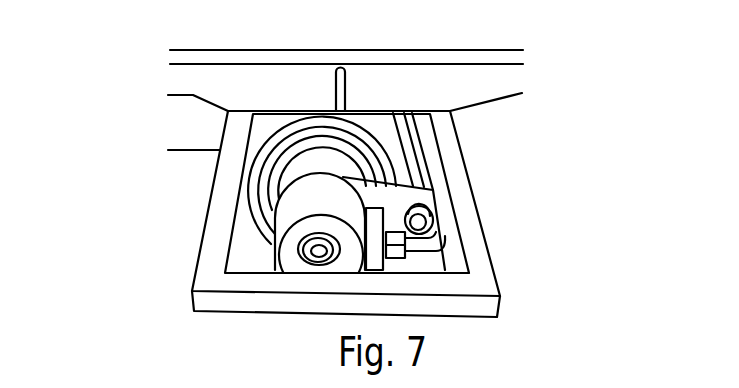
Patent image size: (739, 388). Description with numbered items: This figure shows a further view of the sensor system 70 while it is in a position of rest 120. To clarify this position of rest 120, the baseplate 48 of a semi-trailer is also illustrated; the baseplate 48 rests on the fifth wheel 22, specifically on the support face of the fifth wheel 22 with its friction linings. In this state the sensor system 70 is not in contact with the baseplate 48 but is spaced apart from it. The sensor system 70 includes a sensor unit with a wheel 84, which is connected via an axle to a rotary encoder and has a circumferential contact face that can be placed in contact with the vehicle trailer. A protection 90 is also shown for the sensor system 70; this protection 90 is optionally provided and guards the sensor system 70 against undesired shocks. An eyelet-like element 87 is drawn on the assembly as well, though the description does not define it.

The baseplate 48 is at (510, 57).
The fifth wheel 22 is at (505, 80).
The wheel 84 is at (385, 152).
The eyelet connector 87 is at (405, 200).
The sensor system 70 is at (497, 212).
The protection 90 is at (485, 283).
The position of rest 120 is at (98, 205).